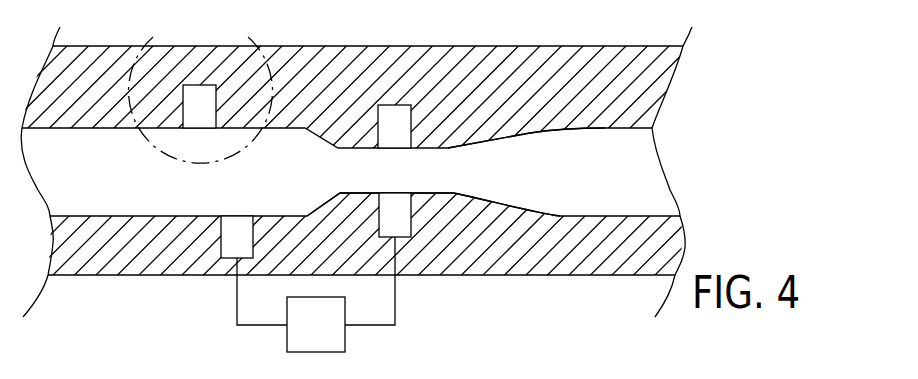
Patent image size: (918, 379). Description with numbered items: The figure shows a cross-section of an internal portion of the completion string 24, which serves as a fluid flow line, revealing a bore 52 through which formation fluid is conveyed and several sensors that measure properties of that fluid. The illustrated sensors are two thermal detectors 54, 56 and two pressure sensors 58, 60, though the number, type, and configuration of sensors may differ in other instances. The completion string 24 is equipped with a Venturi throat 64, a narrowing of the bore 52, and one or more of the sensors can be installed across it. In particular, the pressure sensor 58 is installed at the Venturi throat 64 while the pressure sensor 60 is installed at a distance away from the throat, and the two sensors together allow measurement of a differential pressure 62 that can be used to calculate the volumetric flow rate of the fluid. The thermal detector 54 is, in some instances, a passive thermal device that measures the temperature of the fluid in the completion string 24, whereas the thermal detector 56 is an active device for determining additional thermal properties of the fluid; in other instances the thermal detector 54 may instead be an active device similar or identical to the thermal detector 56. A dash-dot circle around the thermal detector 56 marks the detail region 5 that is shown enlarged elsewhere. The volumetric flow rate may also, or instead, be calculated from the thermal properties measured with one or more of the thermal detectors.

The detail view reference (FIG. 5) 5 is at (153, 37).
The completion string 24 is at (528, 46).
The bore 52 is at (600, 128).
The thermal detector 54 is at (408, 105).
The thermal detector 56 is at (183, 100).
The pressure sensor 58 is at (402, 237).
The pressure sensor 60 is at (215, 255).
The differential pressure 62 is at (345, 337).
The Venturi throat 64 is at (425, 193).